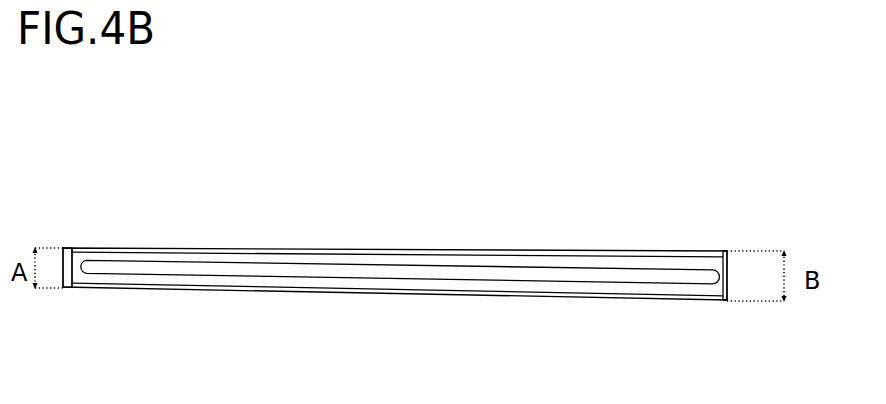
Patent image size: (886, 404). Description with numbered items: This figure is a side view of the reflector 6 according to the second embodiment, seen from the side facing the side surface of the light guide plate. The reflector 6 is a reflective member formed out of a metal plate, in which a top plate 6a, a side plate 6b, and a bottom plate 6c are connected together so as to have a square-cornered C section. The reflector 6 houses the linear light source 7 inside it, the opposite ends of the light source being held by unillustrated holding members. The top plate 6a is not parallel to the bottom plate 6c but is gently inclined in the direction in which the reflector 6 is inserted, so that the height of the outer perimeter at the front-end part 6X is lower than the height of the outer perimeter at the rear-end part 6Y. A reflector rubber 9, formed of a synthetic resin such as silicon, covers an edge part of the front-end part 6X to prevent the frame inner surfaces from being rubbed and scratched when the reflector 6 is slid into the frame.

The reflector 6 is at (393, 278).
The top plate 6a is at (600, 254).
The side plate 6b is at (518, 262).
The bottom plate 6c is at (375, 293).
The front-end part 6X is at (63, 267).
The rear-end part 6Y is at (727, 273).
The linear light source 7 is at (440, 278).
The reflector rubber 9 is at (70, 289).